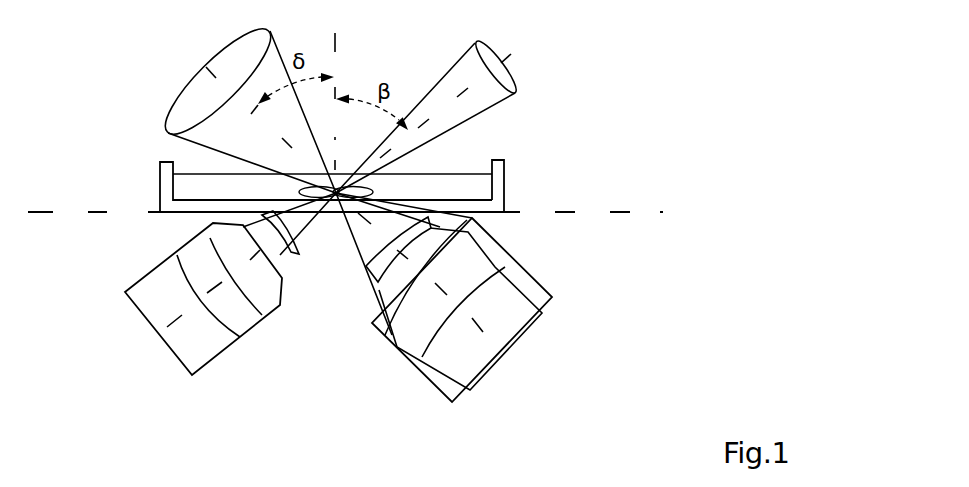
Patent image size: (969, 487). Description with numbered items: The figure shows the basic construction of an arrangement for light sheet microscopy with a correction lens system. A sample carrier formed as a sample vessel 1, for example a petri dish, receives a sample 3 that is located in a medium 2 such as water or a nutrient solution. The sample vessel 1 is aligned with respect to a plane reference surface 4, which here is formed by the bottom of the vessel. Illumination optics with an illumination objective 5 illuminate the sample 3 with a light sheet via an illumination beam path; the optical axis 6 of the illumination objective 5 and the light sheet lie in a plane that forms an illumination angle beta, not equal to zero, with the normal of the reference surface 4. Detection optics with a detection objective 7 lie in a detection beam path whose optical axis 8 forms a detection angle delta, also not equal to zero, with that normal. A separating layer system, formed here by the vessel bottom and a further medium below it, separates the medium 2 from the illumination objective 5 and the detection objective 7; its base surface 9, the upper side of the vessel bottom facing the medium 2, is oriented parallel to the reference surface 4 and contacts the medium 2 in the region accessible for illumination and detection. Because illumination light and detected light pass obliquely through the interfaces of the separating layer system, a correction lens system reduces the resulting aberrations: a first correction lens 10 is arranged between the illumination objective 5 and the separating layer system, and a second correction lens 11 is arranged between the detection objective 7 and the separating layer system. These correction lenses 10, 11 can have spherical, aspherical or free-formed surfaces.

The sample vessel 1 is at (498, 182).
The medium 2 is at (187, 190).
The sample 3 is at (330, 190).
The plane reference surface 4 is at (632, 210).
The illumination objective 5 is at (148, 285).
The optical axis 6 is at (142, 345).
The detection objective 7 is at (547, 312).
The optical axis 8 is at (518, 366).
The base surface 9 is at (455, 199).
The first correction lens 10 is at (293, 260).
The second correction lens 11 is at (360, 270).